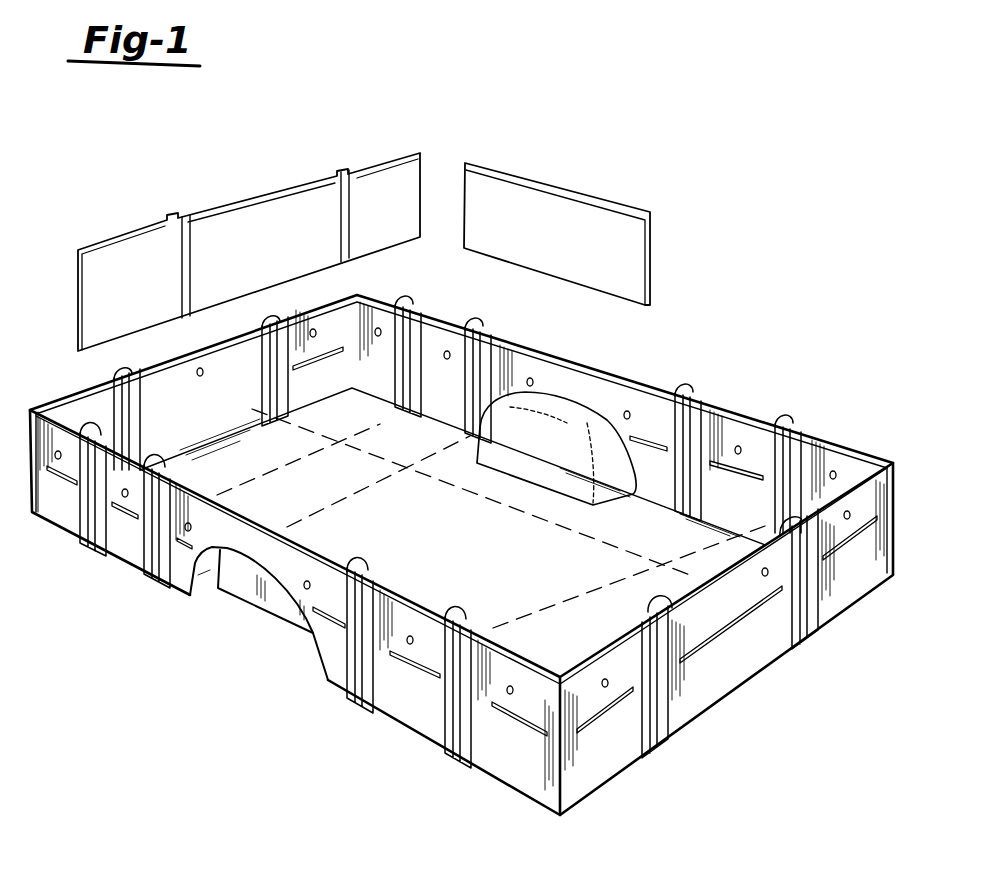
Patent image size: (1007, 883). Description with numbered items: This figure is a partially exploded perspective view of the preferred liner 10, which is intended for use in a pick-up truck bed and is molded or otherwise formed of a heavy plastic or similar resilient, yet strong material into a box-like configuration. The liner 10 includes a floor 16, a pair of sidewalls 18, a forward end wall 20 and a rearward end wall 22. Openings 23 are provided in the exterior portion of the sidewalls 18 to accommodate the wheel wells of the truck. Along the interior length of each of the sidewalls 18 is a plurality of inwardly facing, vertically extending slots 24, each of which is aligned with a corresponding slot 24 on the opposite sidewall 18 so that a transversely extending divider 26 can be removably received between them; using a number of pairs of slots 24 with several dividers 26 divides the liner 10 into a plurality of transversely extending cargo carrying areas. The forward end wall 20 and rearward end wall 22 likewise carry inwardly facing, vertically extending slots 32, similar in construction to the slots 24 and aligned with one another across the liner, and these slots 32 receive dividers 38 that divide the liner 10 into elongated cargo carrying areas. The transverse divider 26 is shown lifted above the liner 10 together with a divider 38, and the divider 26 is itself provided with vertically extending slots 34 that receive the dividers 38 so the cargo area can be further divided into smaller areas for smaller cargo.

The liner 10 is at (638, 380).
The floor 16 is at (373, 414).
The sidewalls 18 is at (462, 342).
The forward end wall 20 is at (338, 323).
The rearward end wall 22 is at (827, 598).
The openings 23 is at (210, 590).
The slots 24 is at (100, 420).
The divider 26 is at (237, 215).
The slots 32 is at (270, 365).
The slots 34 is at (343, 212).
The dividers 38 is at (623, 203).